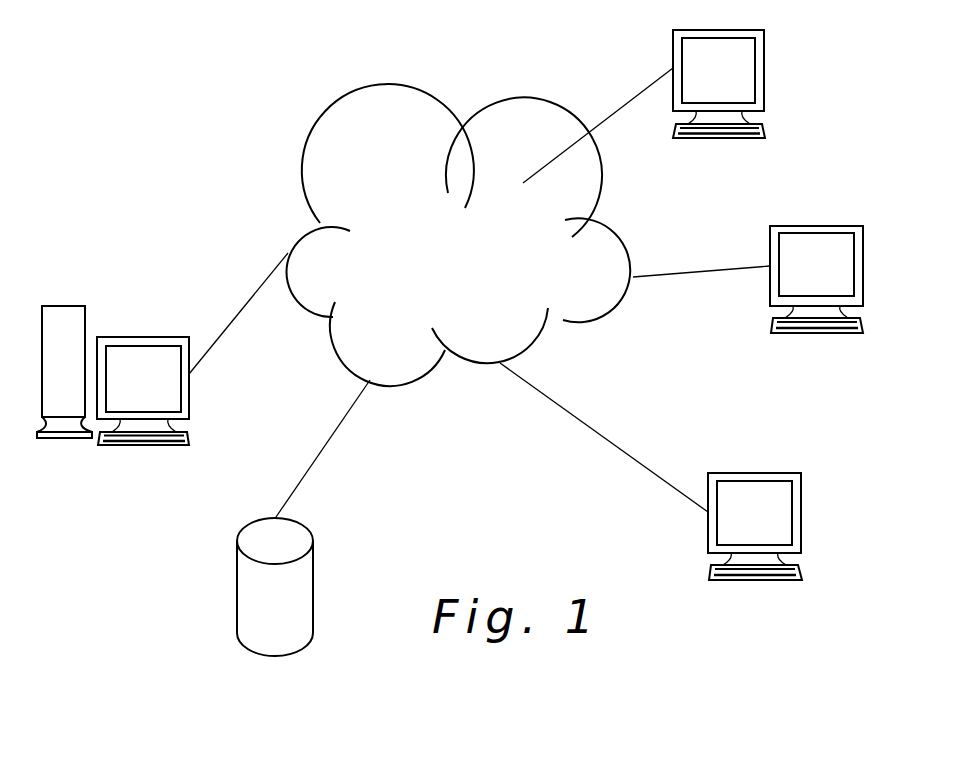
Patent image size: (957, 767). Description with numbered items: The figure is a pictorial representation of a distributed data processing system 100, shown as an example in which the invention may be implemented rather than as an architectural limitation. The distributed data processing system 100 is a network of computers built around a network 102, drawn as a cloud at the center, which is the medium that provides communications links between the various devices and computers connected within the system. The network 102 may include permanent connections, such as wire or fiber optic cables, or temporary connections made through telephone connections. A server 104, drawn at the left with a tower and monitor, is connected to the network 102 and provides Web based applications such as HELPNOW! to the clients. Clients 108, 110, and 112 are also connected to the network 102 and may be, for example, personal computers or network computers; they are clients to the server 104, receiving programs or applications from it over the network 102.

The distributed data processing system 100 is at (488, 546).
The network 102 is at (475, 272).
The server 104 is at (143, 337).
The client 108 is at (673, 45).
The client 110 is at (817, 226).
The client 112 is at (757, 582).